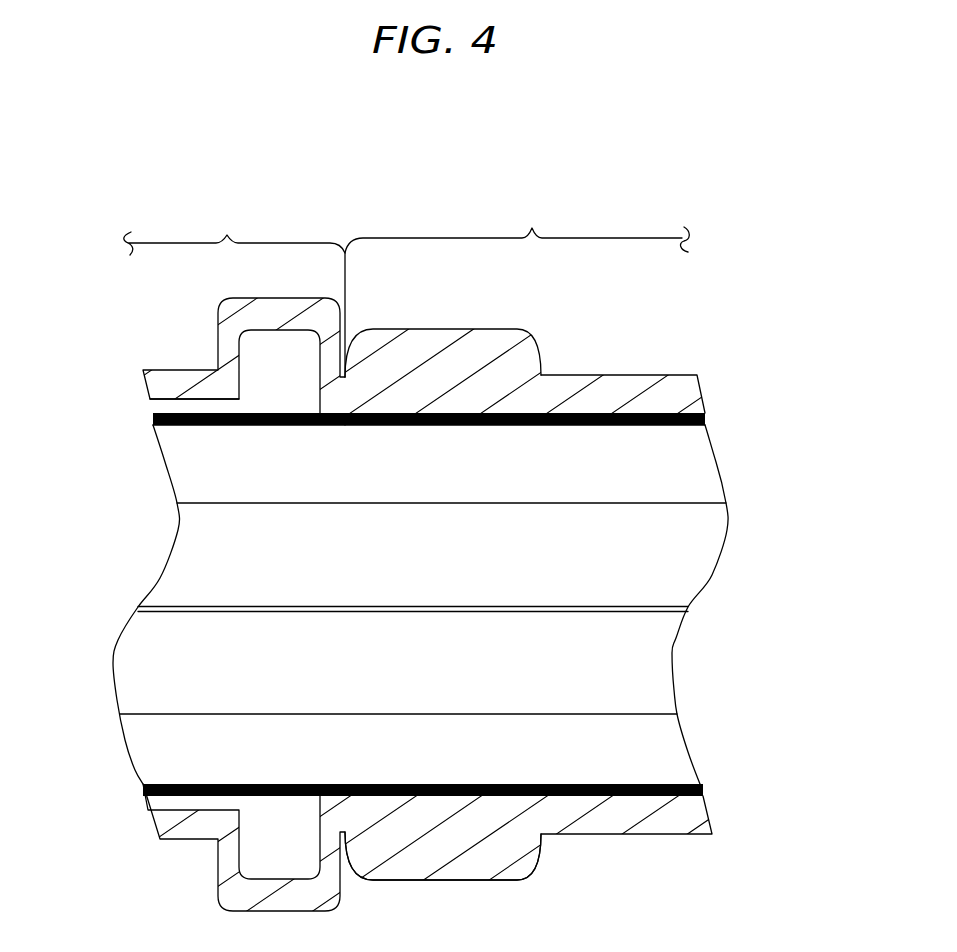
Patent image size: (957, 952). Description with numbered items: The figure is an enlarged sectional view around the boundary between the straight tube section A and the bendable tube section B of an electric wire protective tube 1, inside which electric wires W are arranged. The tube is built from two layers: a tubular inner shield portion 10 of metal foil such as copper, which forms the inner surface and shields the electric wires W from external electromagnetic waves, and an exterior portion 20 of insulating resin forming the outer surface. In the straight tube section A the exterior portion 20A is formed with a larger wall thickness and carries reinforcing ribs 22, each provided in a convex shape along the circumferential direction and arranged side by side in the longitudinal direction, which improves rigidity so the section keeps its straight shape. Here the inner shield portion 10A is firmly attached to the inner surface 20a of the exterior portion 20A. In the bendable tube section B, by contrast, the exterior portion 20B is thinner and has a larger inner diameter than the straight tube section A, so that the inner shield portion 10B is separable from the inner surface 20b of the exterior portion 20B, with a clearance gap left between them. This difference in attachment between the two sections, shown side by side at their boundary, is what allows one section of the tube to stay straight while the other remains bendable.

The electric wire protective tube 1 is at (383, 200).
The inner shield portion 10 is at (495, 670).
The inner shield portion in the straight tube section 10A is at (580, 430).
The inner shield portion in the bendable tube section 10B is at (197, 430).
The exterior portion 20 is at (460, 391).
The exterior portion in the straight tube section 20A is at (567, 338).
The exterior portion in the bendable tube section 20B is at (197, 338).
The inner surface of the exterior portion in the straight tube section 20a is at (427, 426).
The inner surface of the exterior portion in the bendable tube section 20b is at (150, 413).
The reinforcing rib 22 is at (430, 328).
The electric wires W is at (652, 673).
The straight tube section A is at (517, 226).
The bendable tube section B is at (234, 289).